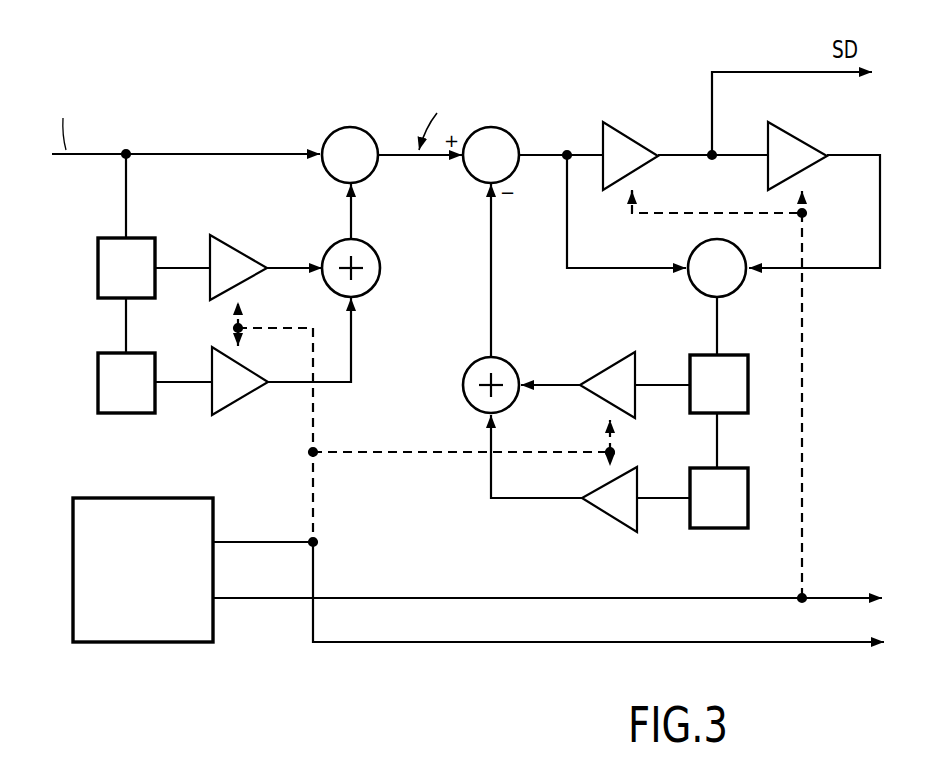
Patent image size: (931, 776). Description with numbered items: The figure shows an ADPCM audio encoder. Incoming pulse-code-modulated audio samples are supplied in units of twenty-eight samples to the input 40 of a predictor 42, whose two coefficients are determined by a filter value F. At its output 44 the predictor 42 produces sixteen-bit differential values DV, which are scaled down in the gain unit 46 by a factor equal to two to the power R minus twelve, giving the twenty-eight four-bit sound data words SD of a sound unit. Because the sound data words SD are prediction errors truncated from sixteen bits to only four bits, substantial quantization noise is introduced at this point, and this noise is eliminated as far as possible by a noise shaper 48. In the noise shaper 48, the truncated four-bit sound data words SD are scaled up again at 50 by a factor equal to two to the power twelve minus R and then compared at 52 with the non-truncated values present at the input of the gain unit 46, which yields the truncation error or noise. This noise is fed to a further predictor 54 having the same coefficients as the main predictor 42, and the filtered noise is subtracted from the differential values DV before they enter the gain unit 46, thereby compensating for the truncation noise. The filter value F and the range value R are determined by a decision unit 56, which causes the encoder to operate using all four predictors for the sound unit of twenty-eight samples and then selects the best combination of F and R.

The input 40 is at (106, 152).
The predictor 42 is at (195, 335).
The output 44 is at (393, 160).
The gain unit 46 is at (626, 131).
The noise shaper 48 is at (610, 322).
The scaling unit 50 is at (791, 131).
The comparator 52 is at (738, 290).
The further predictor 54 is at (680, 452).
The decision unit 56 is at (165, 497).